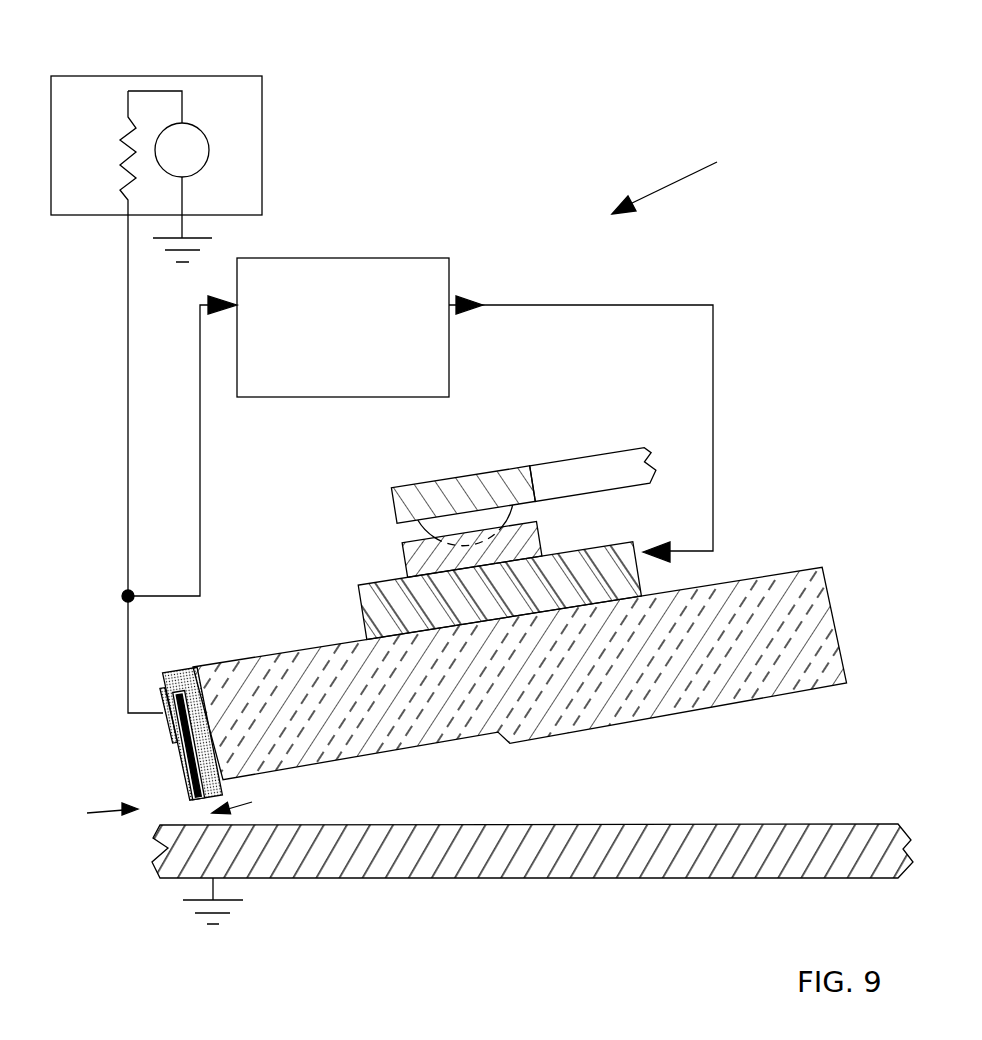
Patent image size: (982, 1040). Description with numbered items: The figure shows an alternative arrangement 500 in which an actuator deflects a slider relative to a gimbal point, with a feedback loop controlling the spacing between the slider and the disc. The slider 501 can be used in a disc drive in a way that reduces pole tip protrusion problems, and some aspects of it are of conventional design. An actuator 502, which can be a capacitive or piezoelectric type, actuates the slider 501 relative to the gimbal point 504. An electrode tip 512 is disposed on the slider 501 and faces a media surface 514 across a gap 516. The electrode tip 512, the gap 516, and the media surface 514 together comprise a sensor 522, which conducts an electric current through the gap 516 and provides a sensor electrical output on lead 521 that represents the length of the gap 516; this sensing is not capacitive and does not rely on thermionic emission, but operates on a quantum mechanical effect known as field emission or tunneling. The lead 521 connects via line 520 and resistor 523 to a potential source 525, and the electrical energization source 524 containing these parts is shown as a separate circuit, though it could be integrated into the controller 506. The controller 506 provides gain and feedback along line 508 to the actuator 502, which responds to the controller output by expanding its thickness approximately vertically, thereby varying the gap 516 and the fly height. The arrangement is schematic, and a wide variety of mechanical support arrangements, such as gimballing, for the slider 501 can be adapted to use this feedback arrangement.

The alternative arrangement 500 is at (686, 176).
The slider 501 is at (758, 615).
The actuator 502 is at (410, 607).
The gimbal point 504 is at (417, 530).
The controller 506 is at (345, 258).
The line 508 is at (713, 350).
The electrode tip 512 is at (180, 798).
The media surface 514 is at (380, 825).
The gap 516 is at (254, 801).
The line 520 is at (128, 638).
The lead 521 is at (218, 770).
The sensor 522 is at (90, 813).
The resistor 523 is at (125, 168).
The electrical energization source 524 is at (262, 120).
The potential source 525 is at (197, 128).